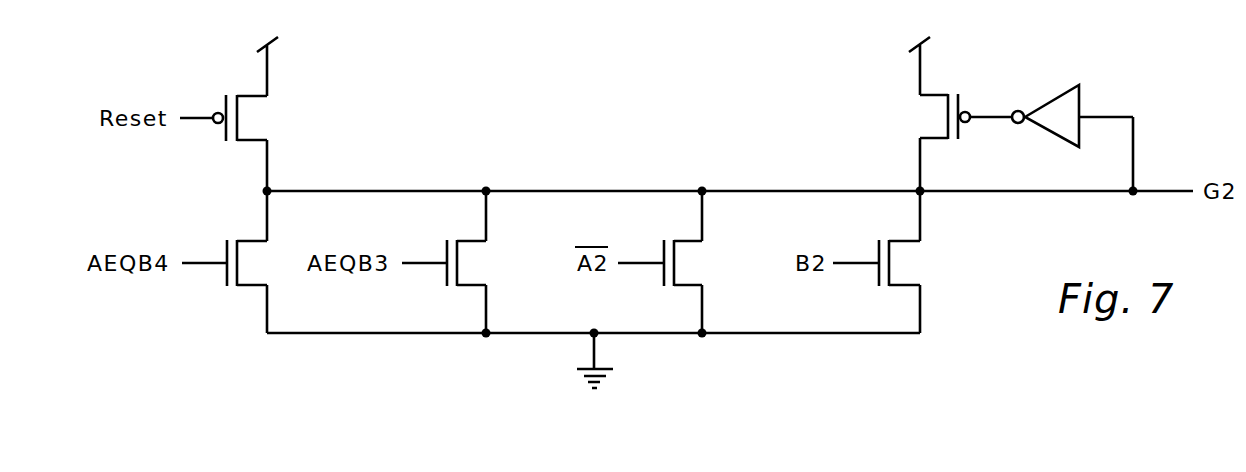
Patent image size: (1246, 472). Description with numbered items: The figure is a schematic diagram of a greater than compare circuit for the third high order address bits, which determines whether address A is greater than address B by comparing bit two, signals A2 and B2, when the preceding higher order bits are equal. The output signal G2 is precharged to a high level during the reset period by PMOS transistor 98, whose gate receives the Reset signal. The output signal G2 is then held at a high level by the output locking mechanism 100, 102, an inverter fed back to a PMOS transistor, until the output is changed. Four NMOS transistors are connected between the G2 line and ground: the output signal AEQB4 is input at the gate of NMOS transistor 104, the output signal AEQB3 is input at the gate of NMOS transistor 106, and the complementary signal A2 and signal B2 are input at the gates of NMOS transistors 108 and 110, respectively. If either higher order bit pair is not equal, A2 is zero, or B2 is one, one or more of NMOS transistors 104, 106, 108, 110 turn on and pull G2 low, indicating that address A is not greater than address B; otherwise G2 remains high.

The PMOS transistor 98 is at (246, 95).
The output locking mechanism 100 is at (1032, 122).
The output locking mechanism 102 is at (936, 94).
The NMOS transistor 104 is at (242, 287).
The NMOS transistor 106 is at (462, 287).
The NMOS transistor 108 is at (679, 287).
The NMOS transistor 110 is at (894, 287).